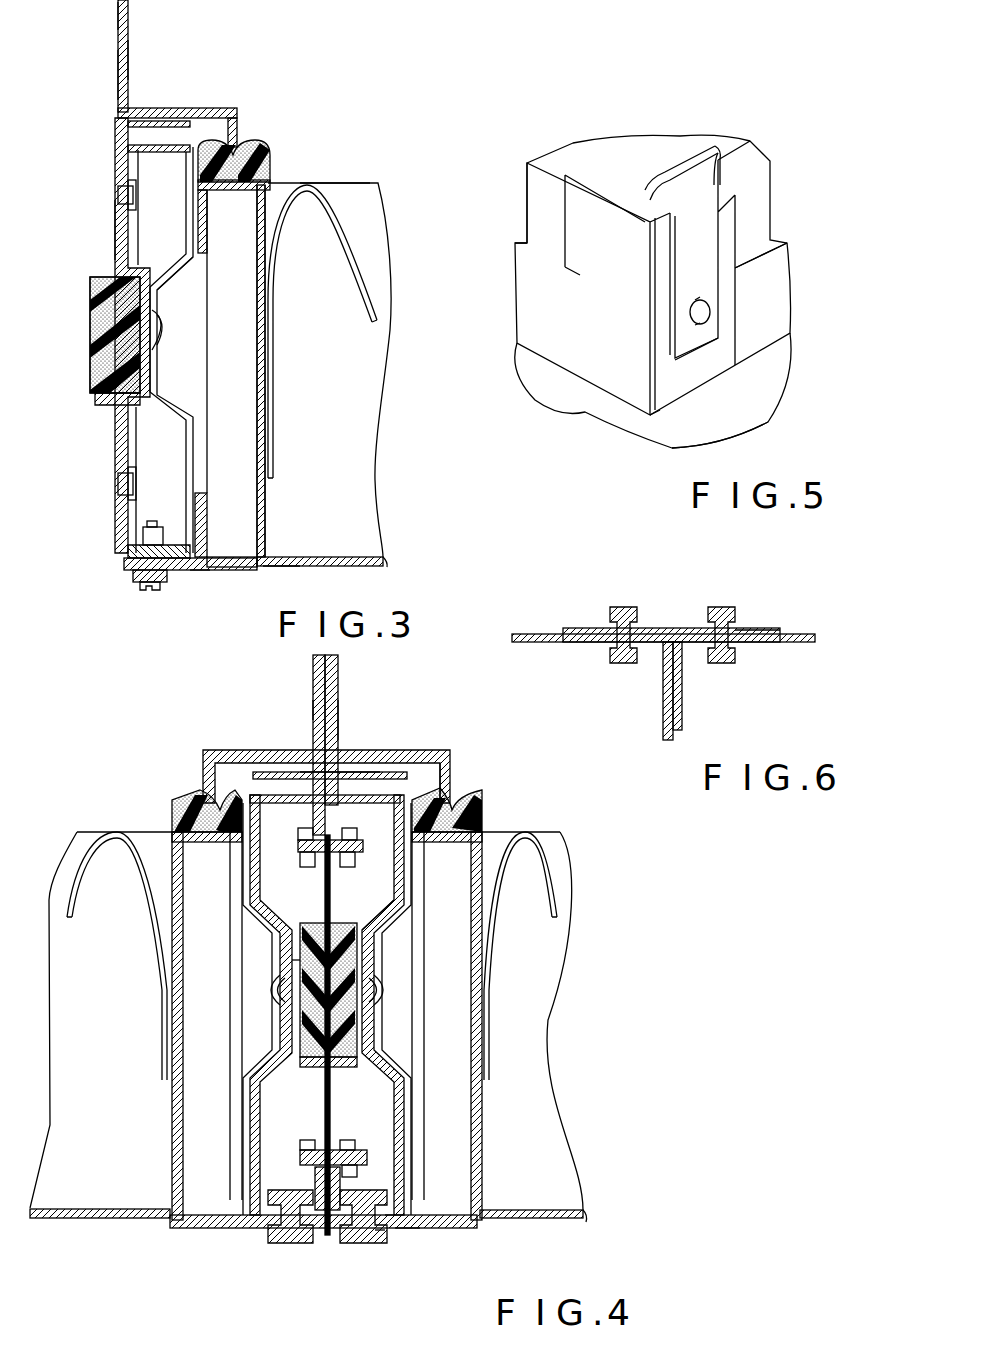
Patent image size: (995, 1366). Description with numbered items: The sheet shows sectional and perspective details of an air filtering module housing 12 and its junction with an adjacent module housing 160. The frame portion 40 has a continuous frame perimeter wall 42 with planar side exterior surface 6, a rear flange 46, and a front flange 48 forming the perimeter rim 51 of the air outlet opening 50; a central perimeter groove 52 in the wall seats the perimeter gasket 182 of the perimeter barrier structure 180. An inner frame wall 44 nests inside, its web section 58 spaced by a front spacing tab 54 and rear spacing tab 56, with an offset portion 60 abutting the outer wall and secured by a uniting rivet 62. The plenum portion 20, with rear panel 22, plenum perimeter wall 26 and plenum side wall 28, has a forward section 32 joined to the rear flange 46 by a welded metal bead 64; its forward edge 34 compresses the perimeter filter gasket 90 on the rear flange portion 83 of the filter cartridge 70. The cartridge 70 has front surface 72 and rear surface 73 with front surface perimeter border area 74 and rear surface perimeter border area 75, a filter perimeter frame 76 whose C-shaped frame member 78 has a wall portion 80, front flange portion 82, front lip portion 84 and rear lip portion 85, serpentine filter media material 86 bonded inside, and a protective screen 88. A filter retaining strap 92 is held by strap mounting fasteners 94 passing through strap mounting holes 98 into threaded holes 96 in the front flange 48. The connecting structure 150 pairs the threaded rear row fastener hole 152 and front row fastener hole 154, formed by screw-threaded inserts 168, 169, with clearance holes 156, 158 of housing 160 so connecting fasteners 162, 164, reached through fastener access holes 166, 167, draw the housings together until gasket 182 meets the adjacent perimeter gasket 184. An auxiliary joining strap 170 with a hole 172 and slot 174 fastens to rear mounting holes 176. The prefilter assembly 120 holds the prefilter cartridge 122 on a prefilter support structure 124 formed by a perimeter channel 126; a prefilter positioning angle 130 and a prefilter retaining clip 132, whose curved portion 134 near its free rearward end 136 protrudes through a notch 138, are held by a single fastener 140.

In FIG. 3, the side exterior surface 6 is at (128, 547).
In FIG. 3, the module housing 12 is at (128, 26).
In FIG. 6, the module housing 12 is at (682, 702).
In FIG. 4, the module housing 12 is at (338, 697).
In FIG. 3, the plenum portion 20 is at (117, 68).
In FIG. 4, the plenum portion 20 is at (338, 719).
In FIG. 5, the rear panel 22 is at (747, 414).
In FIG. 3, the plenum perimeter wall 26 is at (128, 59).
In FIG. 4, the plenum perimeter wall 26 is at (338, 700).
In FIG. 3, the plenum side wall 28 is at (116, 21).
In FIG. 4, the plenum side wall 28 is at (313, 706).
In FIG. 3, the forward section 32 is at (229, 108).
In FIG. 4, the forward section 32 is at (424, 777).
In FIG. 3, the forward edge 34 is at (228, 150).
In FIG. 4, the forward edge 34 is at (437, 806).
In FIG. 3, the frame portion 40 is at (116, 117).
In FIG. 4, the frame portion 40 is at (299, 750).
In FIG. 3, the frame perimeter wall 42 is at (116, 248).
In FIG. 4, the frame perimeter wall 42 is at (311, 910).
In FIG. 3, the inner frame wall 44 is at (169, 283).
In FIG. 4, the inner frame wall 44 is at (380, 936).
In FIG. 3, the rear flange 46 is at (128, 122).
In FIG. 4, the rear flange 46 is at (397, 765).
In FIG. 3, the front flange 48 is at (128, 572).
In FIG. 4, the front flange 48 is at (321, 1242).
In FIG. 3, the air outlet opening 50 is at (315, 568).
In FIG. 4, the air outlet opening 50 is at (512, 1231).
In FIG. 3, the perimeter rim 51 is at (189, 570).
In FIG. 4, the perimeter rim 51 is at (395, 1234).
In FIG. 3, the perimeter groove 52 is at (106, 399).
In FIG. 4, the perimeter groove 52 is at (347, 1071).
In FIG. 3, the front spacing tab 54 is at (122, 537).
In FIG. 4, the front spacing tab 54 is at (315, 1179).
In FIG. 3, the rear spacing tab 56 is at (130, 147).
In FIG. 4, the rear spacing tab 56 is at (316, 822).
In FIG. 3, the web section 58 is at (193, 253).
In FIG. 4, the web section 58 is at (409, 915).
In FIG. 3, the offset portion 60 is at (164, 319).
In FIG. 4, the offset portion 60 is at (380, 964).
In FIG. 4, the uniting rivet 62 is at (380, 992).
In FIG. 3, the welded metal bead 64 is at (138, 106).
In FIG. 4, the welded metal bead 64 is at (382, 753).
In FIG. 3, the filter cartridge 70 is at (376, 411).
In FIG. 4, the filter cartridge 70 is at (543, 1010).
In FIG. 3, the front surface 72 is at (297, 555).
In FIG. 4, the front surface 72 is at (507, 1212).
In FIG. 3, the rear surface 73 is at (335, 181).
In FIG. 4, the rear surface 73 is at (529, 838).
In FIG. 3, the front surface perimeter border area 74 is at (249, 567).
In FIG. 3, the rear surface perimeter border area 75 is at (264, 184).
In FIG. 3, the filter perimeter frame 76 is at (257, 362).
In FIG. 3, the frame member 78 is at (265, 503).
In FIG. 3, the wall portion 80 is at (257, 407).
In FIG. 3, the front flange portion 82 is at (228, 555).
In FIG. 3, the rear flange portion 83 is at (213, 195).
In FIG. 3, the front lip portion 84 is at (207, 503).
In FIG. 3, the rear lip portion 85 is at (208, 232).
In FIG. 3, the filter media material 86 is at (278, 246).
In FIG. 4, the filter media material 86 is at (492, 894).
In FIG. 3, the protective screen 88 is at (391, 556).
In FIG. 4, the protective screen 88 is at (586, 1213).
In FIG. 3, the perimeter filter gasket 90 is at (264, 149).
In FIG. 4, the perimeter filter gasket 90 is at (480, 797).
In FIG. 3, the filter retaining strap 92 is at (214, 572).
In FIG. 4, the filter retaining strap 92 is at (461, 1227).
In FIG. 3, the strap mounting fastener 94 is at (149, 584).
In FIG. 4, the strap mounting fastener 94 is at (359, 1247).
In FIG. 4, the threaded hole 96 is at (389, 1236).
In FIG. 4, the strap mounting hole 98 is at (382, 1238).
In FIG. 5, the prefilter assembly 120 is at (767, 212).
In FIG. 5, the prefilter cartridge 122 is at (755, 150).
In FIG. 5, the prefilter support structure 124 is at (766, 298).
In FIG. 5, the perimeter channel 126 is at (512, 268).
In FIG. 5, the prefilter positioning angle 130 is at (660, 397).
In FIG. 5, the prefilter retaining clip 132 is at (668, 273).
In FIG. 5, the curved portion 134 is at (642, 186).
In FIG. 5, the free rearward end 136 is at (698, 154).
In FIG. 5, the notch 138 is at (646, 236).
In FIG. 5, the fastener 140 is at (680, 317).
In FIG. 3, the connecting structure 150 is at (110, 467).
In FIG. 4, the connecting structure 150 is at (315, 1115).
In FIG. 3, the rear row fastener hole 152 is at (118, 194).
In FIG. 4, the rear row fastener hole 152 is at (349, 862).
In FIG. 3, the front row fastener hole 154 is at (114, 482).
In FIG. 4, the front row fastener hole 154 is at (354, 1141).
In FIG. 4, the clearance hole 156 is at (309, 859).
In FIG. 4, the clearance hole 158 is at (309, 1136).
In FIG. 6, the module housing 160 is at (663, 702).
In FIG. 4, the module housing 160 is at (313, 693).
In FIG. 4, the connecting fastener 162 is at (361, 852).
In FIG. 4, the connecting fastener 164 is at (367, 1156).
In FIG. 4, the fastener access hole 166 is at (254, 868).
In FIG. 4, the fastener access hole 167 is at (245, 1124).
In FIG. 3, the screw-threaded insert 168 is at (138, 210).
In FIG. 3, the screw-threaded insert 169 is at (138, 481).
In FIG. 6, the auxiliary joining strap 170 is at (671, 629).
In FIG. 6, the hole 172 is at (609, 624).
In FIG. 6, the slot 174 is at (747, 630).
In FIG. 6, the rear mounting hole 176 is at (730, 653).
In FIG. 3, the perimeter barrier structure 180 is at (82, 390).
In FIG. 3, the perimeter gasket 182 is at (85, 343).
In FIG. 4, the perimeter gasket 182 is at (359, 1026).
In FIG. 4, the perimeter gasket 184 is at (284, 958).